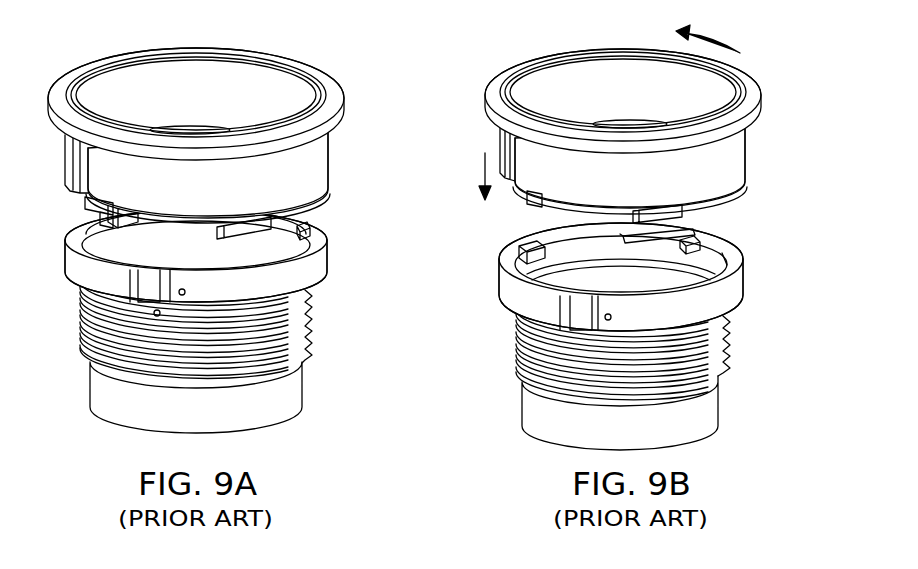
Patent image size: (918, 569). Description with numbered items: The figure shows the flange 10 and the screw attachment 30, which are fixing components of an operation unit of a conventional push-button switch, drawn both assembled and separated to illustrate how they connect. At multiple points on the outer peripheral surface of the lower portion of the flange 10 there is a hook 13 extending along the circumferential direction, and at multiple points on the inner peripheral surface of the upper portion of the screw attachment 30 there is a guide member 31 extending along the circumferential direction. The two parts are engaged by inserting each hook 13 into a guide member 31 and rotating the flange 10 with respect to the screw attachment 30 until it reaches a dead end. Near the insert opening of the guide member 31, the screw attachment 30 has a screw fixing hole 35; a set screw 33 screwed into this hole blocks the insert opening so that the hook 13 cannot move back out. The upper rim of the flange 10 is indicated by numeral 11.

In FIG. 9A, the flange 10 is at (317, 165).
In FIG. 9B, the flange 10 is at (731, 160).
In FIG. 9A, the top flange rim 11 is at (332, 88).
In FIG. 9B, the top flange rim 11 is at (748, 90).
In FIG. 9A, the hook 13 is at (303, 252).
In FIG. 9B, the hook 13 is at (688, 216).
In FIG. 9A, the screw attachment 30 is at (287, 383).
In FIG. 9B, the screw attachment 30 is at (707, 403).
In FIG. 9B, the guide member 31 is at (528, 250).
In FIG. 9A, the set screw 33 is at (155, 314).
In FIG. 9A, the screw fixing hole 35 is at (184, 292).
In FIG. 9B, the screw fixing hole 35 is at (604, 317).